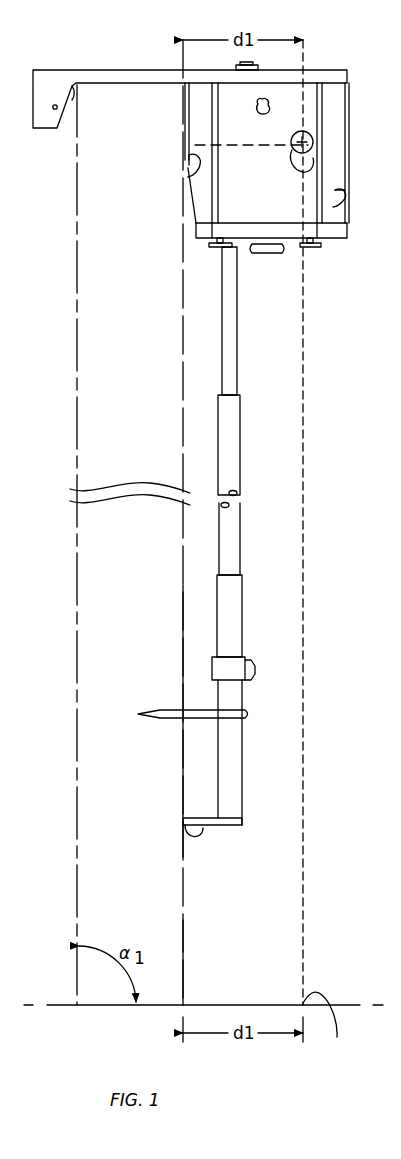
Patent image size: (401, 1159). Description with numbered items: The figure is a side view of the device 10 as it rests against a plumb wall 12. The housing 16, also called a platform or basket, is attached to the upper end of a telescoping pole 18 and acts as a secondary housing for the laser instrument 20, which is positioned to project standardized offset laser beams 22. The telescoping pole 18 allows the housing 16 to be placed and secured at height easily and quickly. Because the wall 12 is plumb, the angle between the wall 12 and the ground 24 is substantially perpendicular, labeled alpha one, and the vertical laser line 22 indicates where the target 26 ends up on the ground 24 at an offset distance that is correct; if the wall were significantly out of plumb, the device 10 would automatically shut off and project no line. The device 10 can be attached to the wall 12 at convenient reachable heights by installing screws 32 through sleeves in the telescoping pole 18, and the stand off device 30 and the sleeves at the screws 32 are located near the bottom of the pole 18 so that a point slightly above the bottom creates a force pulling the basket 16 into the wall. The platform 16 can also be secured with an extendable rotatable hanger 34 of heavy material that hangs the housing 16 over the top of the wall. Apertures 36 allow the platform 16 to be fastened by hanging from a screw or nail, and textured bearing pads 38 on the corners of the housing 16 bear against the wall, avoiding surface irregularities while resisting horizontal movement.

The device 10 is at (340, 256).
The plumb wall 12 is at (190, 919).
The housing 16 is at (266, 192).
The telescoping pole 18 is at (242, 538).
The laser instrument 20 is at (302, 174).
The laser beams 22 is at (303, 672).
The ground 24 is at (350, 1005).
The target 26 is at (325, 1025).
The stand off device 30 is at (185, 835).
The screw 32 is at (157, 710).
The hanger 34 is at (50, 81).
The apertures 36 is at (260, 104).
The bearing pads 38 is at (200, 160).